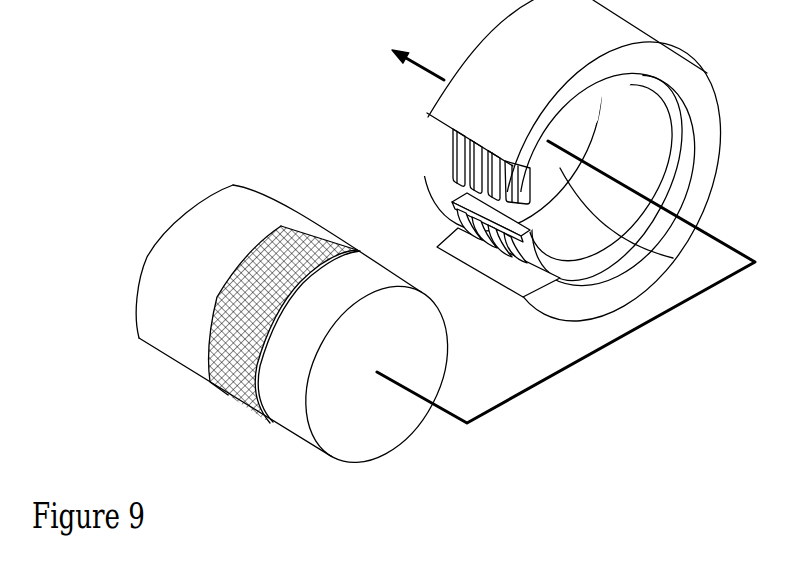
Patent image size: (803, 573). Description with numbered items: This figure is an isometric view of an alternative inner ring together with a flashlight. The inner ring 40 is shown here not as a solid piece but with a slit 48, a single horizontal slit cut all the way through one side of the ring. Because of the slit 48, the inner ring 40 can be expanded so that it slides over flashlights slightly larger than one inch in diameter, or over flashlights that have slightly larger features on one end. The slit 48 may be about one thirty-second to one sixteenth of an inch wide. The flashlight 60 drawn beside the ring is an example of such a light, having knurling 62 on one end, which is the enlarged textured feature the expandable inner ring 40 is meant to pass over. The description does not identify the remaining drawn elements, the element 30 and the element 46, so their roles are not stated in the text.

The sleeve block 30 is at (623, 32).
The inner ring 40 is at (665, 180).
The inner bore hub 46 is at (673, 258).
The slit 48 is at (450, 200).
The flashlight 60 is at (208, 196).
The knurling 62 is at (235, 402).